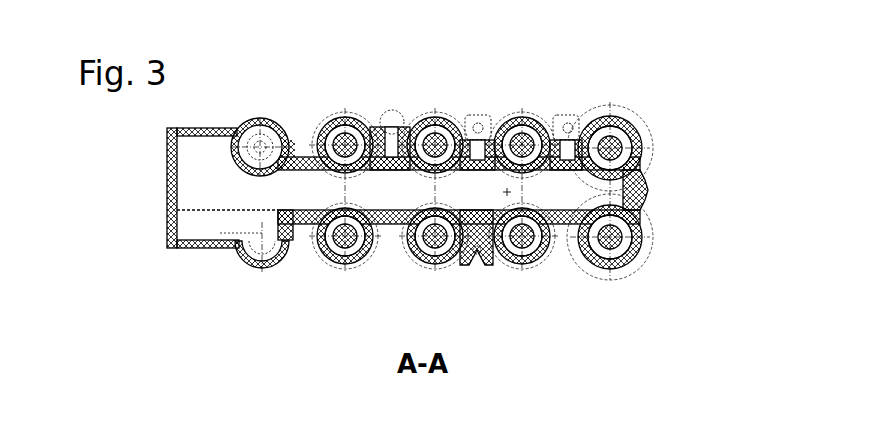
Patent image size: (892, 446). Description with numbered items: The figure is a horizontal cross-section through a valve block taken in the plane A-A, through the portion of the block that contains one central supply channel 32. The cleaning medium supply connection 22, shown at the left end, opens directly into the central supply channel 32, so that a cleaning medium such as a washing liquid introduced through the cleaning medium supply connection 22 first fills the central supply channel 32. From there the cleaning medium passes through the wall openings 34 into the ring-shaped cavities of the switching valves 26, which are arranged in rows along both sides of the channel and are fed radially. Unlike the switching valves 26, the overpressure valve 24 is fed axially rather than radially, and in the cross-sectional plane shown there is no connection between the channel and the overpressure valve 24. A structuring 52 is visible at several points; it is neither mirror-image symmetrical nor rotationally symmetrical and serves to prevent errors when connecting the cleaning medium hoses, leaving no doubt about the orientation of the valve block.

The cleaning medium supply connection 22 is at (257, 137).
The overpressure valve 24 is at (253, 263).
The switching valve 26 is at (352, 128).
The central supply channel 32 is at (397, 207).
The wall opening 34 is at (315, 162).
The structuring 52 is at (477, 127).